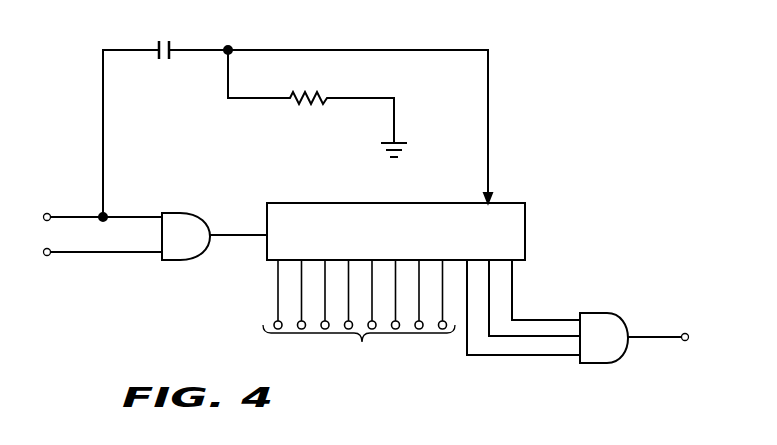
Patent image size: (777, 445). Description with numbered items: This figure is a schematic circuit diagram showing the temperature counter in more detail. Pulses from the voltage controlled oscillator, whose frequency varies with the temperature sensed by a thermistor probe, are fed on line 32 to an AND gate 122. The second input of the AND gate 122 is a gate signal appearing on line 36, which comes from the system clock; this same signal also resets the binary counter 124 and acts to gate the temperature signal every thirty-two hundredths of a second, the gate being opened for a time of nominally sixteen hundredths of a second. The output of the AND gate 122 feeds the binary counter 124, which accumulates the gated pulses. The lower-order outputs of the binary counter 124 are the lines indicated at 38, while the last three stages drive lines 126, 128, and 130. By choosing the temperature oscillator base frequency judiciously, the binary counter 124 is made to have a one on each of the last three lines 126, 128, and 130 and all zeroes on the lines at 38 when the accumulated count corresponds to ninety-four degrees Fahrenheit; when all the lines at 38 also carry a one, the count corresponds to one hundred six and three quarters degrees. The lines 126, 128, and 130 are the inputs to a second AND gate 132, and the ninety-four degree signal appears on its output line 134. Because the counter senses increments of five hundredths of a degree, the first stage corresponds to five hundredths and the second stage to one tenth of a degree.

The line 36 is at (75, 215).
The line 32 is at (75, 255).
The AND gate 122 is at (173, 212).
The binary counter 124 is at (327, 203).
The lines 38 is at (359, 313).
The line 126 is at (512, 298).
The line 128 is at (550, 338).
The line 130 is at (478, 357).
The AND gate 132 is at (590, 312).
The line 134 is at (637, 333).